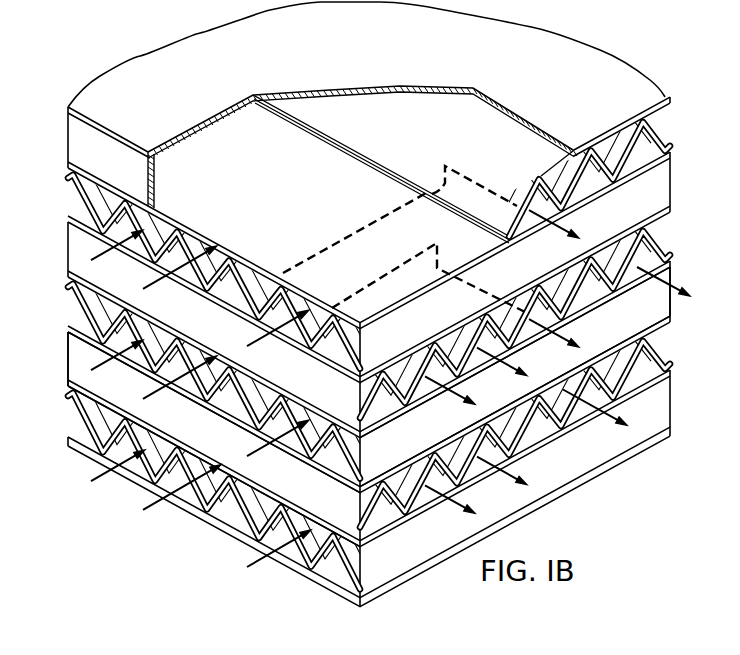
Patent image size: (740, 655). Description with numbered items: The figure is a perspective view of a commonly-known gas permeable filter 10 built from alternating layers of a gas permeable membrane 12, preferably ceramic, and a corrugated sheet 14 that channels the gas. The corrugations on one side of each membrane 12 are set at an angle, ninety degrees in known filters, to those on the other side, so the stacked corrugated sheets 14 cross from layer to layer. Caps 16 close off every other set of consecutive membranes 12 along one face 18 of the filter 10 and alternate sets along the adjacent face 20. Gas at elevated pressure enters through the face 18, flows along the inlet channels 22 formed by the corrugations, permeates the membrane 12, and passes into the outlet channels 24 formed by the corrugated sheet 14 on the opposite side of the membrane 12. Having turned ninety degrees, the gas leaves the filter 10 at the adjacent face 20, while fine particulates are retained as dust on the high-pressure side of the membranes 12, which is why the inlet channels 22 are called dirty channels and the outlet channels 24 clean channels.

The filter 10 is at (155, 40).
The gas permeable membrane 12 is at (108, 105).
The corrugated sheet 14 is at (102, 197).
The caps 16 is at (83, 358).
The face 18 is at (214, 443).
The adjacent face 20 is at (544, 375).
The inlet channels 22 is at (157, 228).
The outlet channels 24 is at (540, 433).